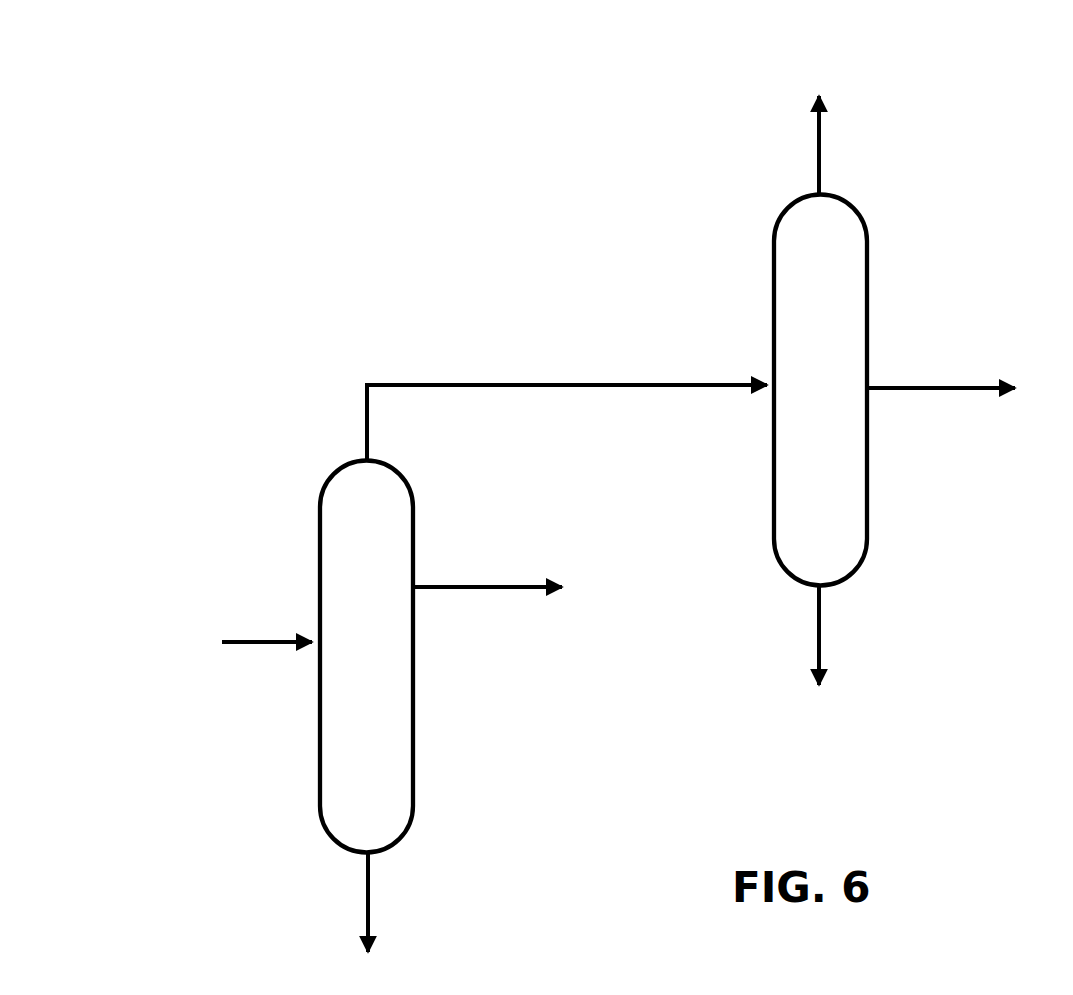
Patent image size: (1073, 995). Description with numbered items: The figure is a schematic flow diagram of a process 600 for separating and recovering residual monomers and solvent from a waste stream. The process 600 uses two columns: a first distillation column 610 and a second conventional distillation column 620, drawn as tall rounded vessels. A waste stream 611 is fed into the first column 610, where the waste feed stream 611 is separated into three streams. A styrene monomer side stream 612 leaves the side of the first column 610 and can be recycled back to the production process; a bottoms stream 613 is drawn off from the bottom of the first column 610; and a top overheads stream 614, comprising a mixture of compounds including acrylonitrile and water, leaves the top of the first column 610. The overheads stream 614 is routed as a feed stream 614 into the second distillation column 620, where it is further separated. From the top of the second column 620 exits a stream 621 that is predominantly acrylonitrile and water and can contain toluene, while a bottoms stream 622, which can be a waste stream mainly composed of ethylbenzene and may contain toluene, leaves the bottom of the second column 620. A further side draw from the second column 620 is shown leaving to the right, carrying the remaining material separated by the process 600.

The process 600 is at (566, 128).
The first distillation column 610 is at (366, 657).
The waste stream 611 is at (257, 640).
The styrene monomer side stream 612 is at (497, 586).
The bottoms stream 613 is at (368, 897).
The top overheads stream 614 is at (533, 384).
The second conventional distillation column 620 is at (820, 389).
The acrylonitrile and water stream 621 is at (819, 142).
The bottoms stream 622 is at (819, 622).